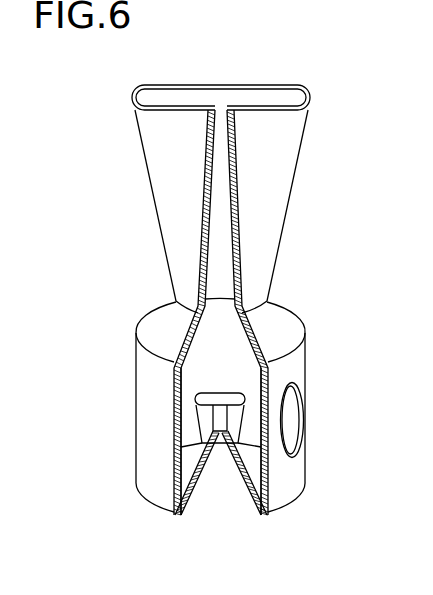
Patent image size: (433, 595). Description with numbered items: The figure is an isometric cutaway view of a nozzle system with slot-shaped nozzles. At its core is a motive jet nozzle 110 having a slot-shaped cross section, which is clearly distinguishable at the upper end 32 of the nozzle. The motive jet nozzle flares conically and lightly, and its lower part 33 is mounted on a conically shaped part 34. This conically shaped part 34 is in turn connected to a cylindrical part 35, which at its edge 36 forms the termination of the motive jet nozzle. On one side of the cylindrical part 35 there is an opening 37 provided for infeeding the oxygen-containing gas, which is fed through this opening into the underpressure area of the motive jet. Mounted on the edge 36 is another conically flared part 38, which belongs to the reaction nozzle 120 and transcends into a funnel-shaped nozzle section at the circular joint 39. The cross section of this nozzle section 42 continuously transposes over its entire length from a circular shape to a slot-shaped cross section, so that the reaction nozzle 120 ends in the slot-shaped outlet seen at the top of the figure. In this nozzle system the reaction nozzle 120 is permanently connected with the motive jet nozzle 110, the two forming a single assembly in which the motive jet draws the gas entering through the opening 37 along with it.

The reaction nozzle 120 is at (298, 140).
The nozzle section 42 is at (165, 165).
The conically flared part 38 is at (163, 318).
The circular joint 39 is at (268, 305).
The edge 36 is at (141, 355).
The cylindrical part 35 is at (139, 415).
The opening 37 is at (293, 418).
The upper end 32 is at (217, 394).
The motive jet nozzle 110 is at (238, 413).
The lower part 33 is at (197, 443).
The conically shaped part 34 is at (183, 462).